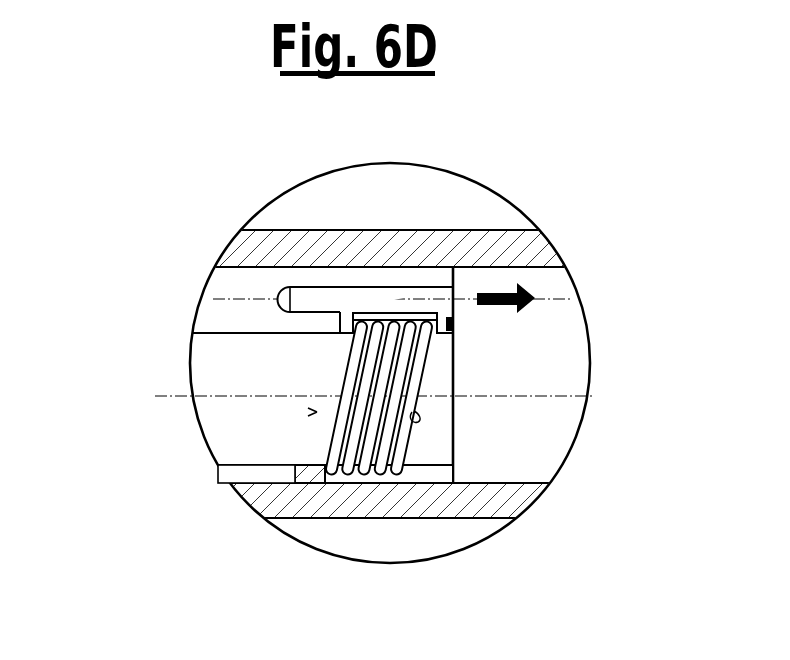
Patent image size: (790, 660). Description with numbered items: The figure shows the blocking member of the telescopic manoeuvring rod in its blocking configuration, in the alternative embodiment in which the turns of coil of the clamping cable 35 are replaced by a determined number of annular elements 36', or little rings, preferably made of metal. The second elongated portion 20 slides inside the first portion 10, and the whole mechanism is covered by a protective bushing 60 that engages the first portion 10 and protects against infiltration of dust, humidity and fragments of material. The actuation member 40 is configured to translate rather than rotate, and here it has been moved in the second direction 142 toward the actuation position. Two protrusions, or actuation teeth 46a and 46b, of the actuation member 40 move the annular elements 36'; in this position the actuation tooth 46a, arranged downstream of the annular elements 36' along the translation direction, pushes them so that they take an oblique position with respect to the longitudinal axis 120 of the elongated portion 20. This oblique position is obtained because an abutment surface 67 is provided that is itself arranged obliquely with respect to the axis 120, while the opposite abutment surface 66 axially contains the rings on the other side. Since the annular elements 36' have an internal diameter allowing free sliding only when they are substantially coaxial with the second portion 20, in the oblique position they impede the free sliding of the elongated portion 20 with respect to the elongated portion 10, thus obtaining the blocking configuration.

The protective bushing 60 is at (356, 232).
The actuation member 40 is at (290, 284).
The actuation tooth 46a is at (337, 320).
The actuation tooth 46b is at (453, 318).
The second direction 142 is at (533, 297).
The longitudinal axis 120 is at (172, 397).
The second elongated portion 20 is at (208, 417).
The clamping cable 35 is at (317, 412).
The abutment surface 66 is at (291, 472).
The annular elements 36' is at (405, 459).
The abutment surface 67 is at (415, 418).
The first portion 10 is at (555, 413).